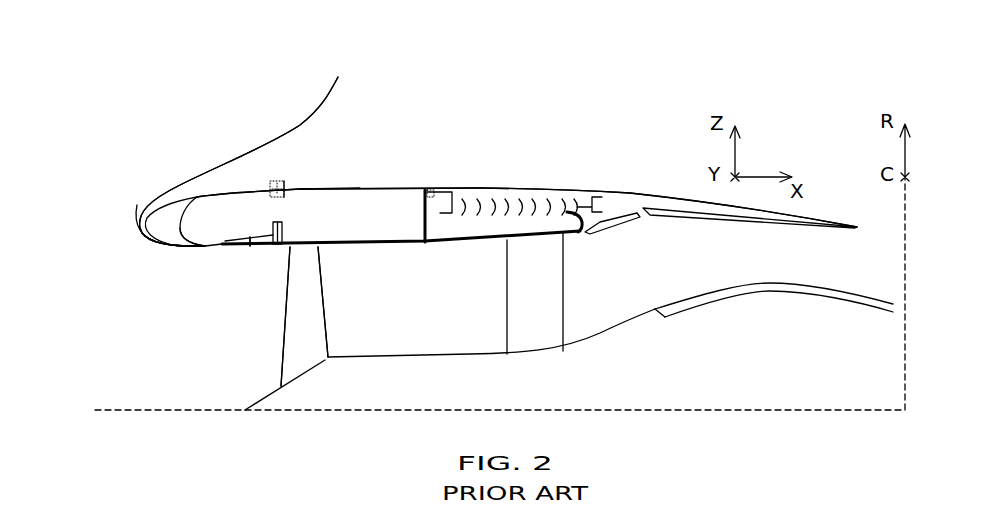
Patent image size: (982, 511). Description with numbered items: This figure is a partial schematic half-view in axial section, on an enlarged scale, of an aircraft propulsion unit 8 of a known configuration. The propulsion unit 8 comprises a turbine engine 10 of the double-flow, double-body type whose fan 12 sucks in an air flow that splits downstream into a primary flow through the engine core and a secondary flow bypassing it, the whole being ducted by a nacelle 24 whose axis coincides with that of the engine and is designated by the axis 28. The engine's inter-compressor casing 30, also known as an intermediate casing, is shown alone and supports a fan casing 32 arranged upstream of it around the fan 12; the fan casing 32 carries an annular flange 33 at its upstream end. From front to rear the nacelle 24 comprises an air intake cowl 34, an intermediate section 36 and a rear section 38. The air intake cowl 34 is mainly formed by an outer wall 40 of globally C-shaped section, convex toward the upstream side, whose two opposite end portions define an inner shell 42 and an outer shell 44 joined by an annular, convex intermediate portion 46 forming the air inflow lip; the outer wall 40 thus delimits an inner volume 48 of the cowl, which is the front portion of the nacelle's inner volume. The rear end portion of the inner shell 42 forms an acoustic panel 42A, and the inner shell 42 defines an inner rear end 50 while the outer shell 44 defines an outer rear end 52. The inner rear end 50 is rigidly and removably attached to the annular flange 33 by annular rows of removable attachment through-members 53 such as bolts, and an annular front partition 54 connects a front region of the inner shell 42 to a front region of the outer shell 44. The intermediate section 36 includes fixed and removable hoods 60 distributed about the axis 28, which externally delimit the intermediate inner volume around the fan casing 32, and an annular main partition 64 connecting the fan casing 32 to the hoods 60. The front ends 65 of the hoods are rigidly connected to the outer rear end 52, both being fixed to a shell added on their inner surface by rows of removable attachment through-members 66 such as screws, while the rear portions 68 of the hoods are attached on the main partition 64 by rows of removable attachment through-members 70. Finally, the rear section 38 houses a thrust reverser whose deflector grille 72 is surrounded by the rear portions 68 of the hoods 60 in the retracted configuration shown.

The aircraft propulsion unit 8 is at (166, 112).
The turbine engine 10 is at (777, 248).
The fan 12 is at (310, 354).
The nacelle 24 is at (472, 54).
The axis 28 is at (145, 410).
The inter-compressor casing 30 is at (548, 308).
The fan casing 32 is at (337, 247).
The annular flange 33 is at (283, 229).
The air intake cowl 34 is at (244, 150).
The intermediate section 36 is at (360, 188).
The rear section 38 is at (667, 194).
The outer wall 40 is at (143, 235).
The intermediate portion 46 is at (171, 237).
The inner shell 42 is at (180, 247).
The acoustic panel 42A is at (250, 246).
The outer shell 44 is at (230, 190).
The inner volume 48 is at (353, 221).
The inner rear end 50 is at (273, 250).
The outer rear end 52 is at (272, 180).
The removable attachment through-members 53 is at (273, 231).
The front partition 54 is at (140, 230).
The hoods 60 is at (332, 188).
The main partition 64 is at (424, 202).
The front ends 65 is at (286, 188).
The removable attachment through-members 66 is at (302, 195).
The rear portions 68 is at (497, 189).
The removable attachment through-members 70 is at (434, 184).
The grille 72 is at (553, 211).